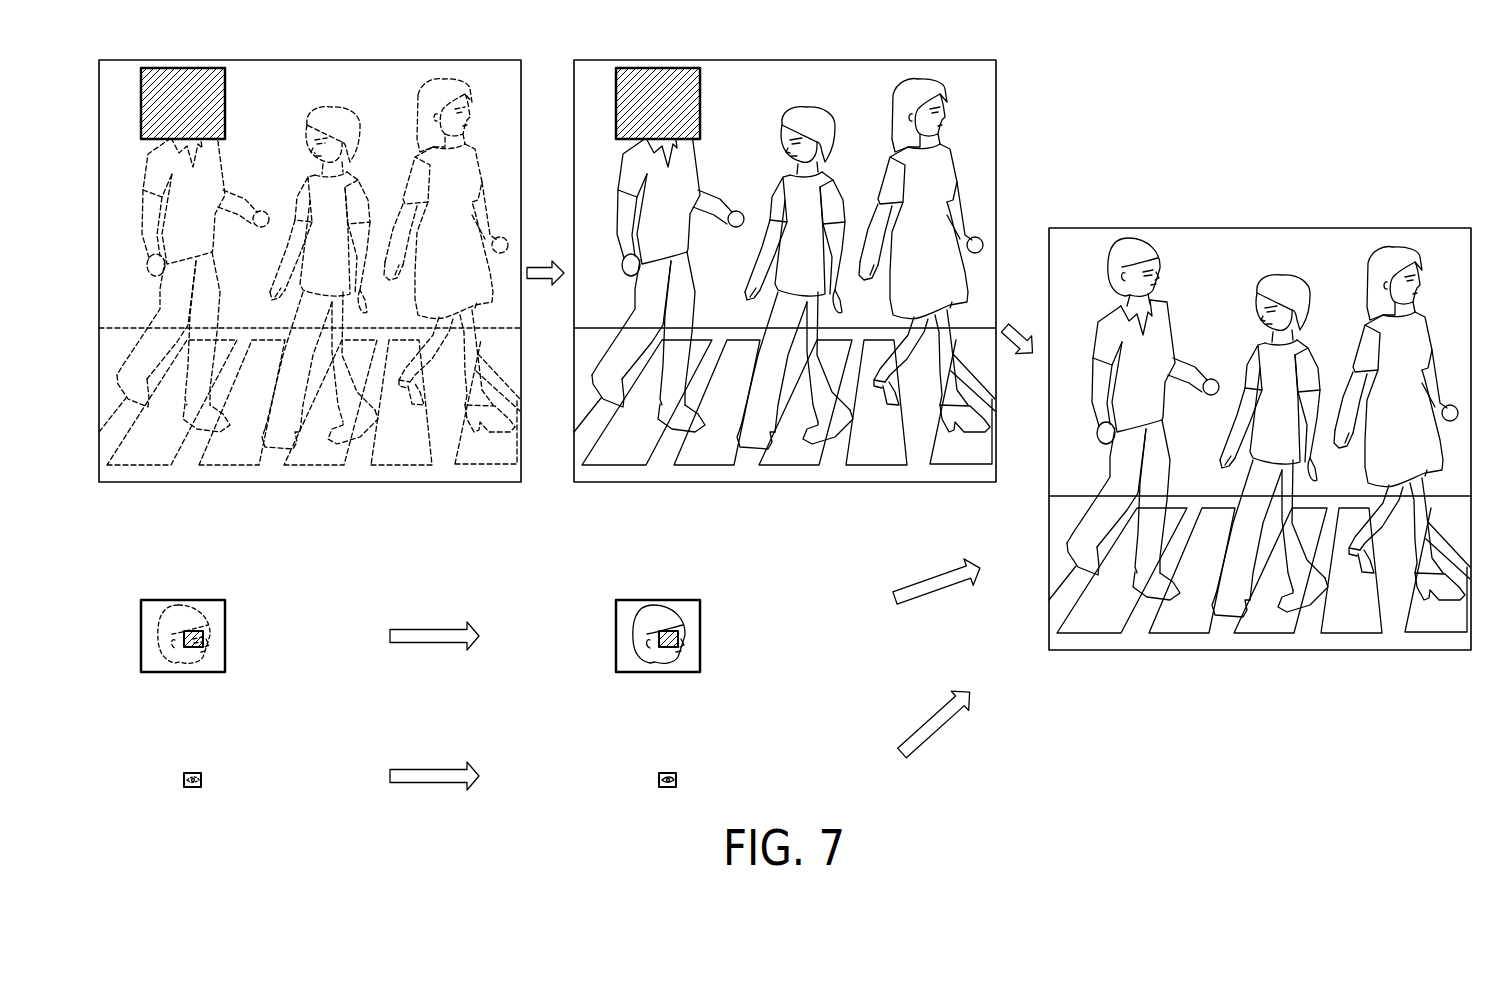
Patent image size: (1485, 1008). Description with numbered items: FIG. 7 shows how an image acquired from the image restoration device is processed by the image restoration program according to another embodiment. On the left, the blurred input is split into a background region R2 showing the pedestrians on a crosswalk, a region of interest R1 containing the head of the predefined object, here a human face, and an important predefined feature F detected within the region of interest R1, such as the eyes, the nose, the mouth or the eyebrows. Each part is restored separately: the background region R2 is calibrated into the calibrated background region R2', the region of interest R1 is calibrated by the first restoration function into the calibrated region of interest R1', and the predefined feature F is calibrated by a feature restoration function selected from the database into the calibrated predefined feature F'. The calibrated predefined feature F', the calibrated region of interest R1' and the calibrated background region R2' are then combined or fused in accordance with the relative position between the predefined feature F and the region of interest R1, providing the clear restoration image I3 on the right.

The background region R2 is at (310, 271).
The calibrated background region R2' is at (785, 271).
The region of interest R1 is at (208, 615).
The calibrated region of interest R1' is at (687, 615).
The predefined feature F is at (212, 756).
The calibrated predefined feature F' is at (689, 756).
The clear restoration image I3 is at (1260, 462).